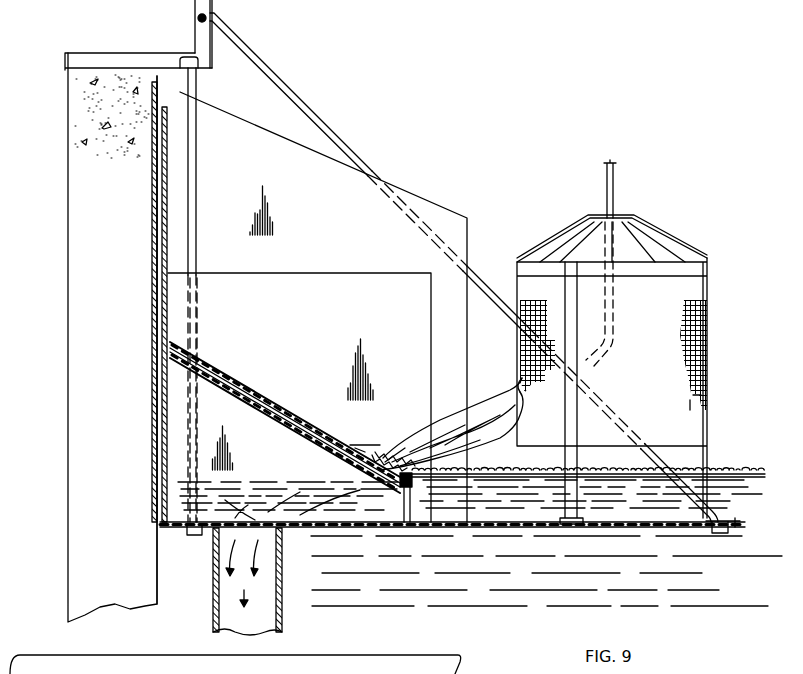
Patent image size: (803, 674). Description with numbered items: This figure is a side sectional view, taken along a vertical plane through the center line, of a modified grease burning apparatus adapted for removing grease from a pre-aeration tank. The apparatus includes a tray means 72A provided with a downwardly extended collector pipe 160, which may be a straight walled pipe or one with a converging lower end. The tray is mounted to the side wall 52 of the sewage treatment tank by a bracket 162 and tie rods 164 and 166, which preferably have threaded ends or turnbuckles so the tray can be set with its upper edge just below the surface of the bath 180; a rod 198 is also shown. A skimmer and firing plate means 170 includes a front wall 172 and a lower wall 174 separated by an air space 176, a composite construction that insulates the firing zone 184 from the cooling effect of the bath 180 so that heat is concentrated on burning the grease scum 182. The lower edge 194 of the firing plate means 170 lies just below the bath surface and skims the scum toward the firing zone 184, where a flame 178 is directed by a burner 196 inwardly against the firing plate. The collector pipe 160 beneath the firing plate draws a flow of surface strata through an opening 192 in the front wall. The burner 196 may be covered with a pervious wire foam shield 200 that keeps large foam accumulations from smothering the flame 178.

The side wall 52 is at (70, 337).
The bracket 162 is at (215, 8).
The tie rod 164 is at (290, 88).
The tie rod 166 is at (197, 163).
The rod 198 is at (172, 420).
The skimmer and firing plate means 170 is at (205, 356).
The front wall 172 is at (220, 367).
The lower wall 174 is at (247, 404).
The air space 176 is at (243, 391).
The flame 178 is at (441, 436).
The bath 180 is at (345, 525).
The grease scum 182 is at (718, 465).
The firing zone 184 is at (372, 443).
The opening 192 is at (425, 523).
The lower edge 194 is at (403, 500).
The burner 196 is at (586, 393).
The pervious wire foam shield 200 is at (652, 230).
The collector pipe 160 is at (283, 600).
The tray means 72A is at (480, 532).